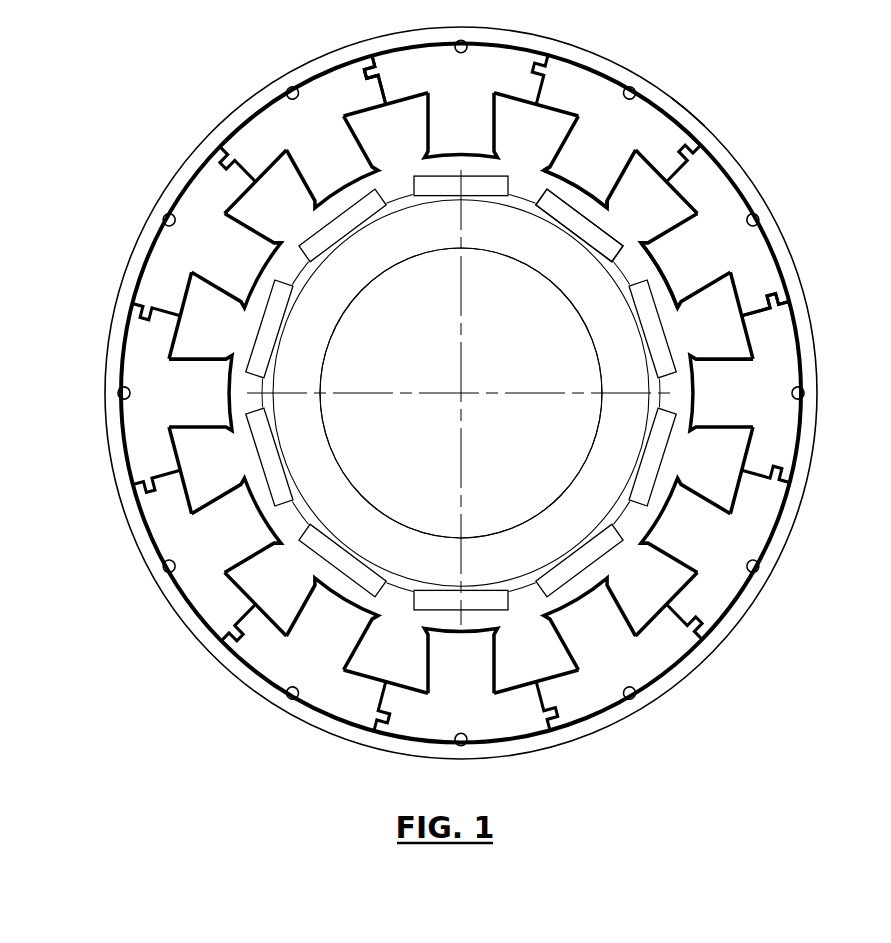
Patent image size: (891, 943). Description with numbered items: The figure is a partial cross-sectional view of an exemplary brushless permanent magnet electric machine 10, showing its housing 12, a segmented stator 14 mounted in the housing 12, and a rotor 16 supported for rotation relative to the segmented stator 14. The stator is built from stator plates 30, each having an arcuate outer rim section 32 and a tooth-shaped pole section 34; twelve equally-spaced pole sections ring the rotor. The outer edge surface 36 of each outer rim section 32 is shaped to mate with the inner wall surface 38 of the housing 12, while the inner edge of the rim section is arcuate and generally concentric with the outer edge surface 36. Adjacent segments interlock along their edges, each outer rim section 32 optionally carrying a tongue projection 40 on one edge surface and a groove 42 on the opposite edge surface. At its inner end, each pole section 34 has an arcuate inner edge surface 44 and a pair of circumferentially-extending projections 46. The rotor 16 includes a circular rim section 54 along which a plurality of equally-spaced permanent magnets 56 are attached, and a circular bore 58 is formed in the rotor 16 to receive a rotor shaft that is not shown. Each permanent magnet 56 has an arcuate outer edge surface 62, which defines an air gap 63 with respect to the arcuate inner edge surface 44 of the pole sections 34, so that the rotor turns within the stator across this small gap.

The electric machine 10 is at (762, 130).
The housing 12 is at (778, 238).
The segmented stator 14 is at (787, 293).
The rotor 16 is at (578, 281).
The stator plate 30 is at (775, 372).
The outer rim section 32 is at (552, 91).
The pole section 34 is at (322, 183).
The outer edge surface 36 is at (783, 275).
The inner wall surface 38 is at (748, 188).
The tongue projection 40 is at (378, 73).
The groove 42 is at (368, 77).
The arcuate inner edge surface 44 is at (572, 184).
The circumferentially-extending projections 46 is at (608, 208).
The circular rim section 54 is at (308, 275).
The permanent magnets 56 is at (335, 547).
The circular bore 58 is at (338, 465).
The arcuate outer edge surface 62 is at (590, 218).
The air gap 63 is at (672, 318).